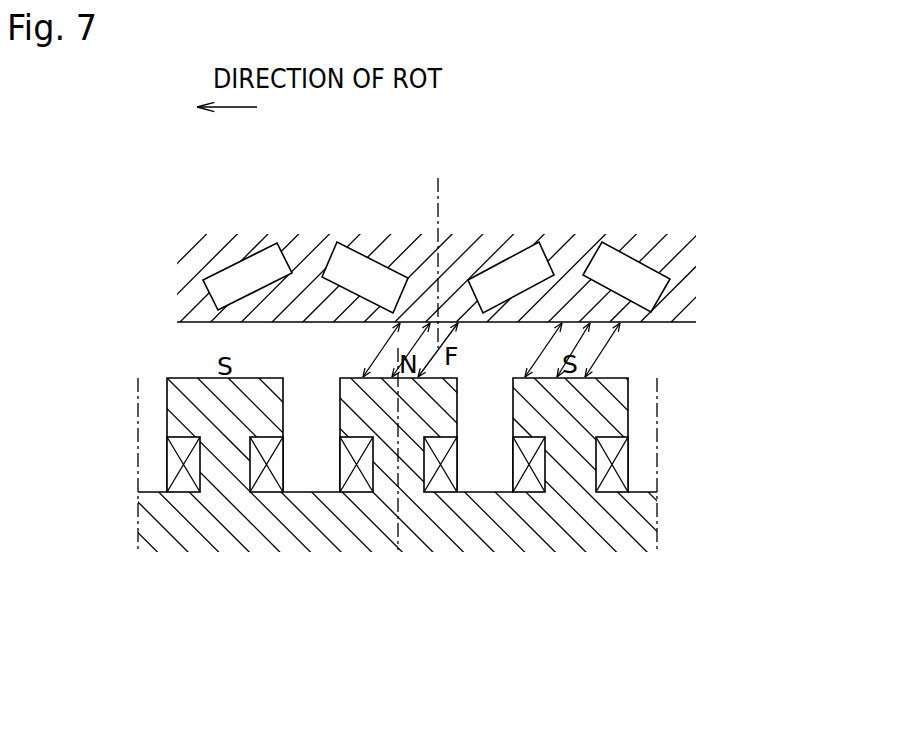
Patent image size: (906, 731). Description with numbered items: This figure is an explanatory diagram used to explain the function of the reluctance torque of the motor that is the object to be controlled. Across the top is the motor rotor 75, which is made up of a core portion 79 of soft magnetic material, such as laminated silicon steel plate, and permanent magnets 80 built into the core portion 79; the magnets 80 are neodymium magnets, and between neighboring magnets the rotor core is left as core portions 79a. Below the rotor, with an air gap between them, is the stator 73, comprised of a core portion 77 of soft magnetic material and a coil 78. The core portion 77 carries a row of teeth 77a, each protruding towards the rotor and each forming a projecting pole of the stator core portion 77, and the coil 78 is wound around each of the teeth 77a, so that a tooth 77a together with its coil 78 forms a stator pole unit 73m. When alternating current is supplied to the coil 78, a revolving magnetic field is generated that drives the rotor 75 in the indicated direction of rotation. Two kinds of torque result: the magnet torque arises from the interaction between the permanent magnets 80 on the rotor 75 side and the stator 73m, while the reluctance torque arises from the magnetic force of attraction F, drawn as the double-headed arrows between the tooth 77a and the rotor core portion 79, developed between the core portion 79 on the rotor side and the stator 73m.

The stator 73 is at (663, 508).
The stator 73m is at (415, 600).
The motor rotor 75 is at (702, 278).
The core portion 77 is at (637, 527).
The teeth 77a is at (373, 415).
The coil 78 is at (352, 470).
The core portion 79 is at (480, 252).
The core portion 79a is at (310, 307).
The permanent magnet 80 is at (220, 283).